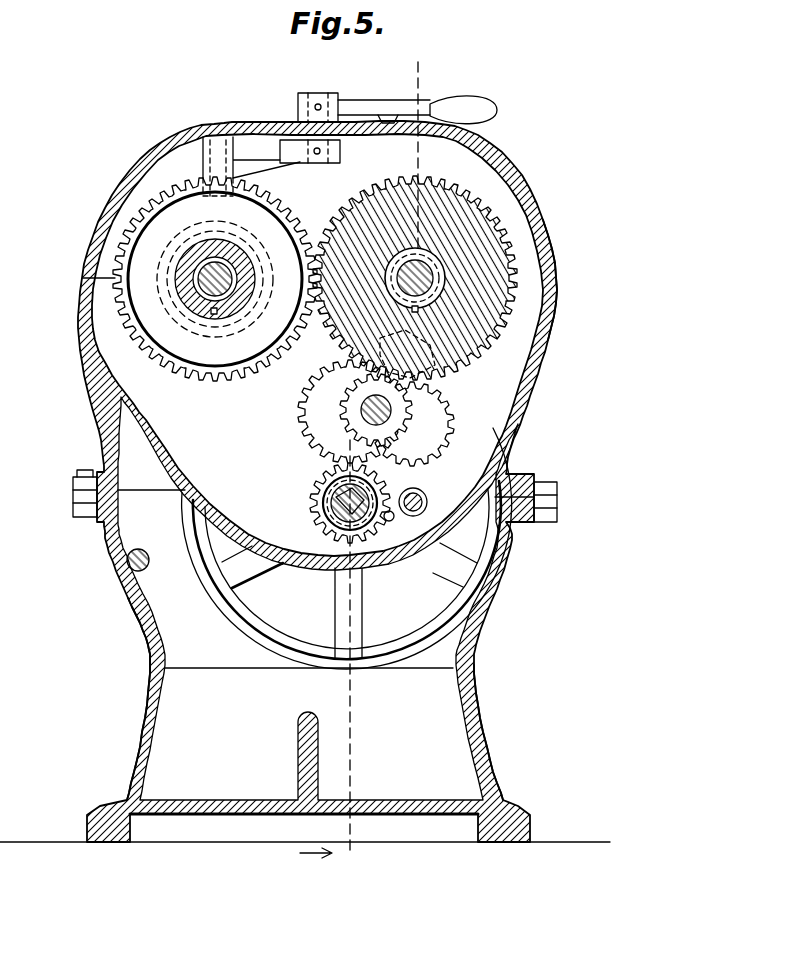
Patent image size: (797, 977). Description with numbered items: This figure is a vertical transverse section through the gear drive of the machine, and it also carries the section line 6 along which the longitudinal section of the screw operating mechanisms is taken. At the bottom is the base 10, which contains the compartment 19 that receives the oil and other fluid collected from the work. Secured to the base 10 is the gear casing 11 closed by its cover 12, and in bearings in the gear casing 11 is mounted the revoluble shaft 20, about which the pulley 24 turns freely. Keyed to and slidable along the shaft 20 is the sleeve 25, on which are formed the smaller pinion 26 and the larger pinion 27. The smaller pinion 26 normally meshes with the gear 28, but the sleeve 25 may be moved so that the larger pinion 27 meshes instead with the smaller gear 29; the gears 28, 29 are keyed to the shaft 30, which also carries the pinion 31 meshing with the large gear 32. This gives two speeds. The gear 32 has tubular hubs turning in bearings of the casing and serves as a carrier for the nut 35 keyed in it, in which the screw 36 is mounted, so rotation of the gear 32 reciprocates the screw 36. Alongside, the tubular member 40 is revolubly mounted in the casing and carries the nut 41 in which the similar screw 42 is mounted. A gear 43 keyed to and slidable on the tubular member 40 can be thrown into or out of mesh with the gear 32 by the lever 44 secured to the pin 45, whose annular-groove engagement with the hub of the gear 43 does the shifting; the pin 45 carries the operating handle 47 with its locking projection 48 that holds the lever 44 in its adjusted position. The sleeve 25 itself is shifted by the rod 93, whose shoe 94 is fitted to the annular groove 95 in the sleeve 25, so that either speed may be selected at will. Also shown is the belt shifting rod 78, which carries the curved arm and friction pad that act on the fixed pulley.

The section line 6— 6 is at (365, 474).
The base 10 is at (478, 702).
The gear casing 11 is at (533, 393).
The cover 12 is at (552, 260).
The compartment 19 is at (170, 757).
The revoluble shaft 20 is at (322, 505).
The pulley 24 is at (252, 614).
The sleeve 25 is at (358, 533).
The smaller pinion 26 is at (318, 535).
The larger pinion 27 is at (318, 472).
The gear 28 is at (305, 393).
The smaller gear 29 is at (435, 440).
The shaft 30 is at (362, 413).
The pinion 31 is at (413, 418).
The gear 32 is at (507, 323).
The nut 35 is at (440, 273).
The screw 36 is at (440, 280).
The tubular member 40 is at (182, 254).
The nut 41 is at (185, 286).
The screw 42 is at (203, 297).
The gear 43 is at (222, 380).
The lever 44 is at (255, 152).
The pin 45 is at (320, 95).
The operating handle 47 is at (377, 92).
The locking projection 48 is at (400, 115).
The belt shifting rod 78 is at (112, 563).
The rod 93 is at (427, 503).
The shoe 94 is at (392, 518).
The annular groove 95 is at (322, 490).